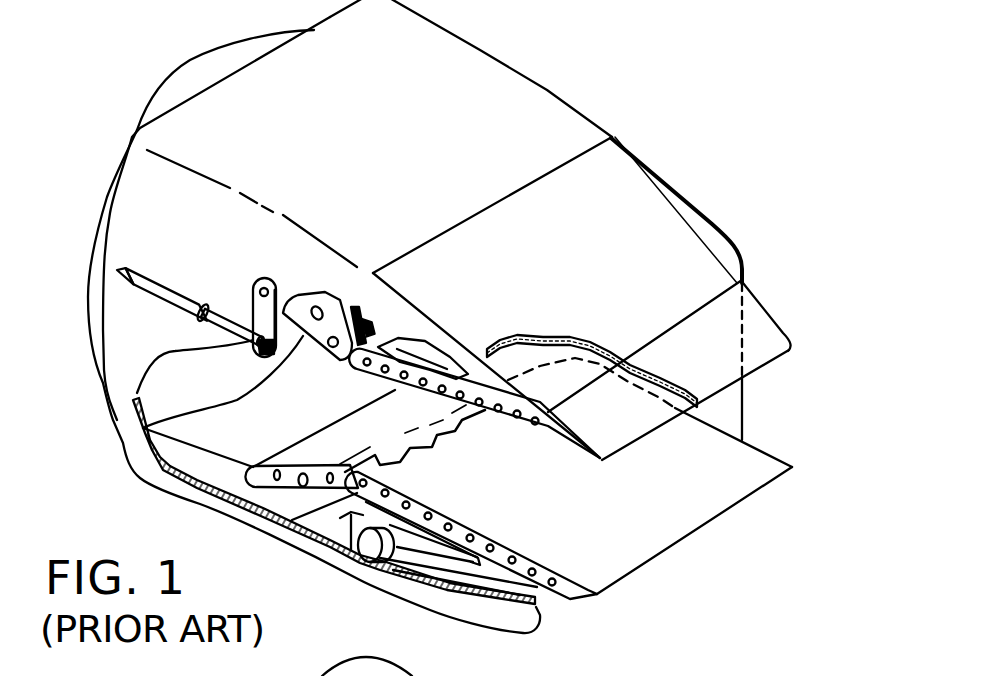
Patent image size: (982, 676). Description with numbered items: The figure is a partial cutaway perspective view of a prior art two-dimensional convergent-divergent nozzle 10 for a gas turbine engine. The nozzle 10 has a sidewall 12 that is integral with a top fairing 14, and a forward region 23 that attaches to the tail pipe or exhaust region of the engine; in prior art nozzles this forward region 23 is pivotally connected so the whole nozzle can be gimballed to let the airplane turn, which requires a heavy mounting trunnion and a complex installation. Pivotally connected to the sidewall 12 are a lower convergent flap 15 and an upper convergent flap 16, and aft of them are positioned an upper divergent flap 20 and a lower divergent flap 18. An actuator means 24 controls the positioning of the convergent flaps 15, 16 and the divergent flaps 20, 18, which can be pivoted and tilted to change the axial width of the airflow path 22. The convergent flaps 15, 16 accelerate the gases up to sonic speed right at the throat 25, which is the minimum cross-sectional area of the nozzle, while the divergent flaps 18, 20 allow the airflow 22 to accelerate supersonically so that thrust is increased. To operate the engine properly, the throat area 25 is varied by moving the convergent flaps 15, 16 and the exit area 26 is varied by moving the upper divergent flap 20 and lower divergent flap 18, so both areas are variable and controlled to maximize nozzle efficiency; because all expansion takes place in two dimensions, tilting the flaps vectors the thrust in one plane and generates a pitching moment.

The two-dimensional convergent-divergent (2DCD) nozzle 10 is at (606, 98).
The sidewall 12 is at (736, 213).
The top fairing 14 is at (376, 96).
The lower convergent flap 15 is at (338, 440).
The upper convergent flap 16 is at (340, 358).
The lower divergent flap 18 is at (697, 487).
The upper divergent flap 20 is at (557, 433).
The airflow path 22 is at (735, 545).
The forward region 23 is at (228, 48).
The actuator means 24 is at (162, 287).
The throat 25 is at (388, 437).
The exit area 26 is at (792, 444).